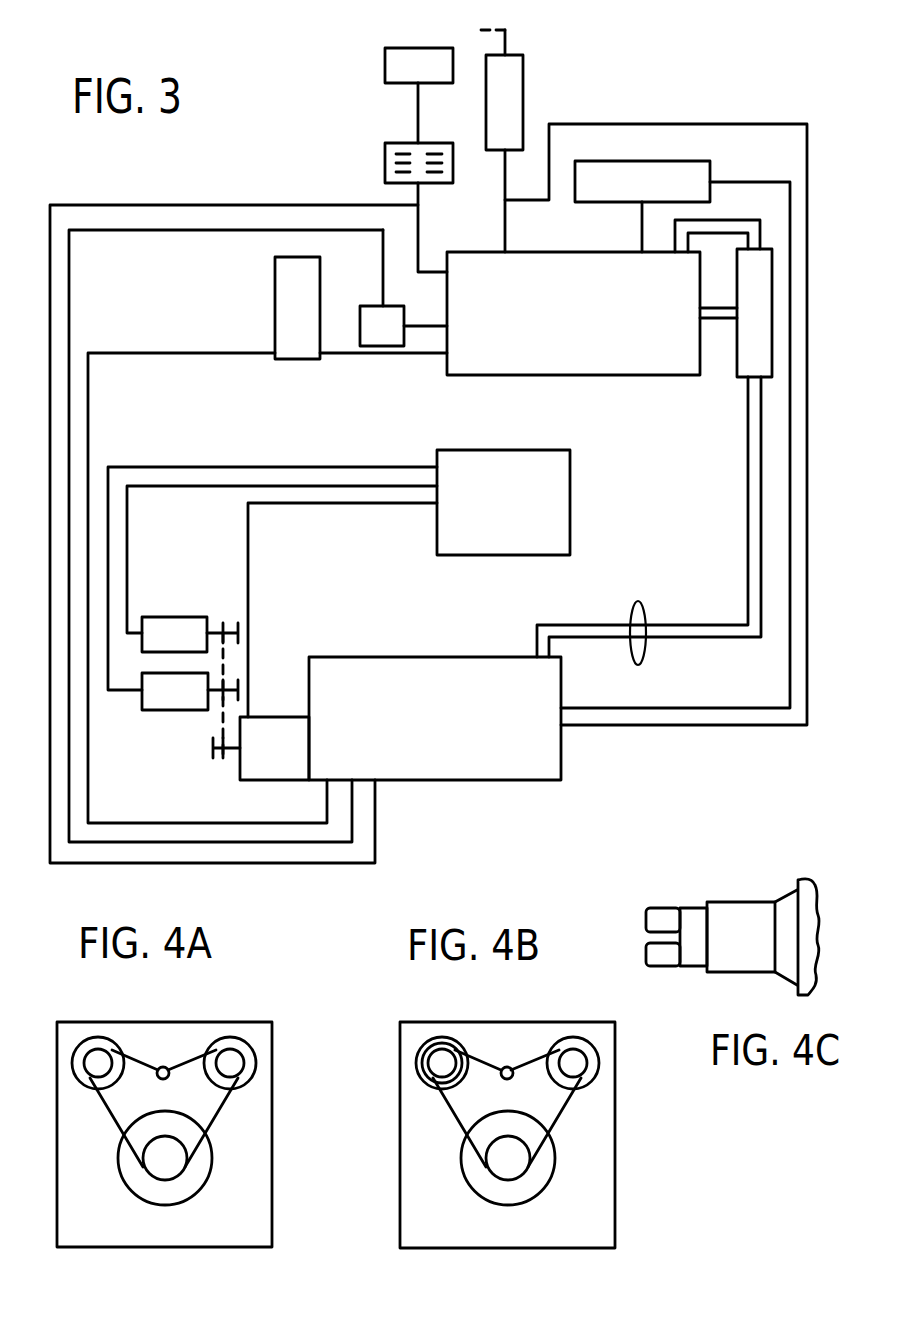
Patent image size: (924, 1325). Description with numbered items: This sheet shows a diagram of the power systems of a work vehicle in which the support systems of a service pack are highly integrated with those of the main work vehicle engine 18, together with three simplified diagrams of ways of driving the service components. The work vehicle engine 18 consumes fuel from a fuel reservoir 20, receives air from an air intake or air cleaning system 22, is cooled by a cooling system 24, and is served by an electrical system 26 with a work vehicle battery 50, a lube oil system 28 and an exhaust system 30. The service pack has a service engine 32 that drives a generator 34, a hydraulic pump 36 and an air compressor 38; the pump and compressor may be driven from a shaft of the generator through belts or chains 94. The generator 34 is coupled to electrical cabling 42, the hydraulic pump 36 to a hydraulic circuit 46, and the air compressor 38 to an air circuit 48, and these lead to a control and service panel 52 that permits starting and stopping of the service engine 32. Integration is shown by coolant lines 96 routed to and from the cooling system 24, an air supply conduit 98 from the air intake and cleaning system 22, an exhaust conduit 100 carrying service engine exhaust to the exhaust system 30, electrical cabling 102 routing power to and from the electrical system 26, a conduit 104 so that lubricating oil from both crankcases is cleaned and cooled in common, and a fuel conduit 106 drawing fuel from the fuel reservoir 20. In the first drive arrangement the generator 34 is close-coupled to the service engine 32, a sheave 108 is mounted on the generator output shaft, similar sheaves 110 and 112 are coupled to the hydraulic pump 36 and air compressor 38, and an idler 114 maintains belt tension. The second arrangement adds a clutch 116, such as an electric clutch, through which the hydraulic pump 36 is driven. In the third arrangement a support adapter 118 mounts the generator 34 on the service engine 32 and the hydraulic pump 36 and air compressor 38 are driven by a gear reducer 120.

In FIG. 3, the work vehicle engine 18 is at (612, 375).
In FIG. 3, the fuel reservoir 20 is at (275, 262).
In FIG. 3, the air intake or air cleaning system 22 is at (633, 161).
In FIG. 3, the cooling system 24 is at (737, 355).
In FIG. 3, the electrical system 26 is at (407, 143).
In FIG. 3, the lube oil system 28 is at (372, 306).
In FIG. 3, the exhaust system 30 is at (523, 93).
In FIG. 3, the service engine 32 is at (414, 780).
In FIG. 4A, the service engine 32 is at (272, 1208).
In FIG. 4B, the service engine 32 is at (615, 1208).
In FIG. 4C, the service engine 32 is at (808, 880).
In FIG. 3, the generator 34 is at (272, 780).
In FIG. 4A, the generator 34 is at (120, 1180).
In FIG. 4B, the generator 34 is at (463, 1180).
In FIG. 4C, the generator 34 is at (730, 972).
In FIG. 3, the hydraulic pump 36 is at (165, 710).
In FIG. 4A, the hydraulic pump 36 is at (78, 1055).
In FIG. 4B, the hydraulic pump 36 is at (422, 1055).
In FIG. 4C, the hydraulic pump 36 is at (662, 908).
In FIG. 3, the air compressor 38 is at (157, 617).
In FIG. 4A, the air compressor 38 is at (255, 1073).
In FIG. 4B, the air compressor 38 is at (598, 1073).
In FIG. 4C, the air compressor 38 is at (658, 966).
In FIG. 3, the electrical cabling 42 is at (248, 547).
In FIG. 3, the hydraulic circuit 46 is at (150, 467).
In FIG. 3, the air circuit 48 is at (185, 486).
In FIG. 3, the work vehicle battery 50 is at (385, 52).
In FIG. 3, the control and service panel 52 is at (570, 502).
In FIG. 3, the belts or chains 94 is at (222, 762).
In FIG. 4A, the belts or chains 94 is at (108, 1108).
In FIG. 4B, the belts or chains 94 is at (450, 1108).
In FIG. 3, the coolant lines 96 is at (640, 602).
In FIG. 3, the air supply conduit 98 is at (703, 708).
In FIG. 3, the exhaust conduit 100 is at (606, 725).
In FIG. 3, the electrical cabling 102 is at (131, 205).
In FIG. 3, the conduit 104 is at (180, 230).
In FIG. 3, the fuel conduit 106 is at (127, 353).
In FIG. 4A, the sheave 108 is at (172, 1162).
In FIG. 4B, the sheave 108 is at (515, 1160).
In FIG. 4A, the sheave 110 is at (97, 1060).
In FIG. 4B, the sheave 110 is at (440, 1060).
In FIG. 4A, the sheave 112 is at (228, 1060).
In FIG. 4B, the sheave 112 is at (572, 1060).
In FIG. 4A, the idler 114 is at (165, 1067).
In FIG. 4B, the idler 114 is at (508, 1067).
In FIG. 4B, the clutch 116 is at (436, 1048).
In FIG. 4C, the support adapter 118 is at (786, 900).
In FIG. 4C, the gear reducer 120 is at (700, 908).